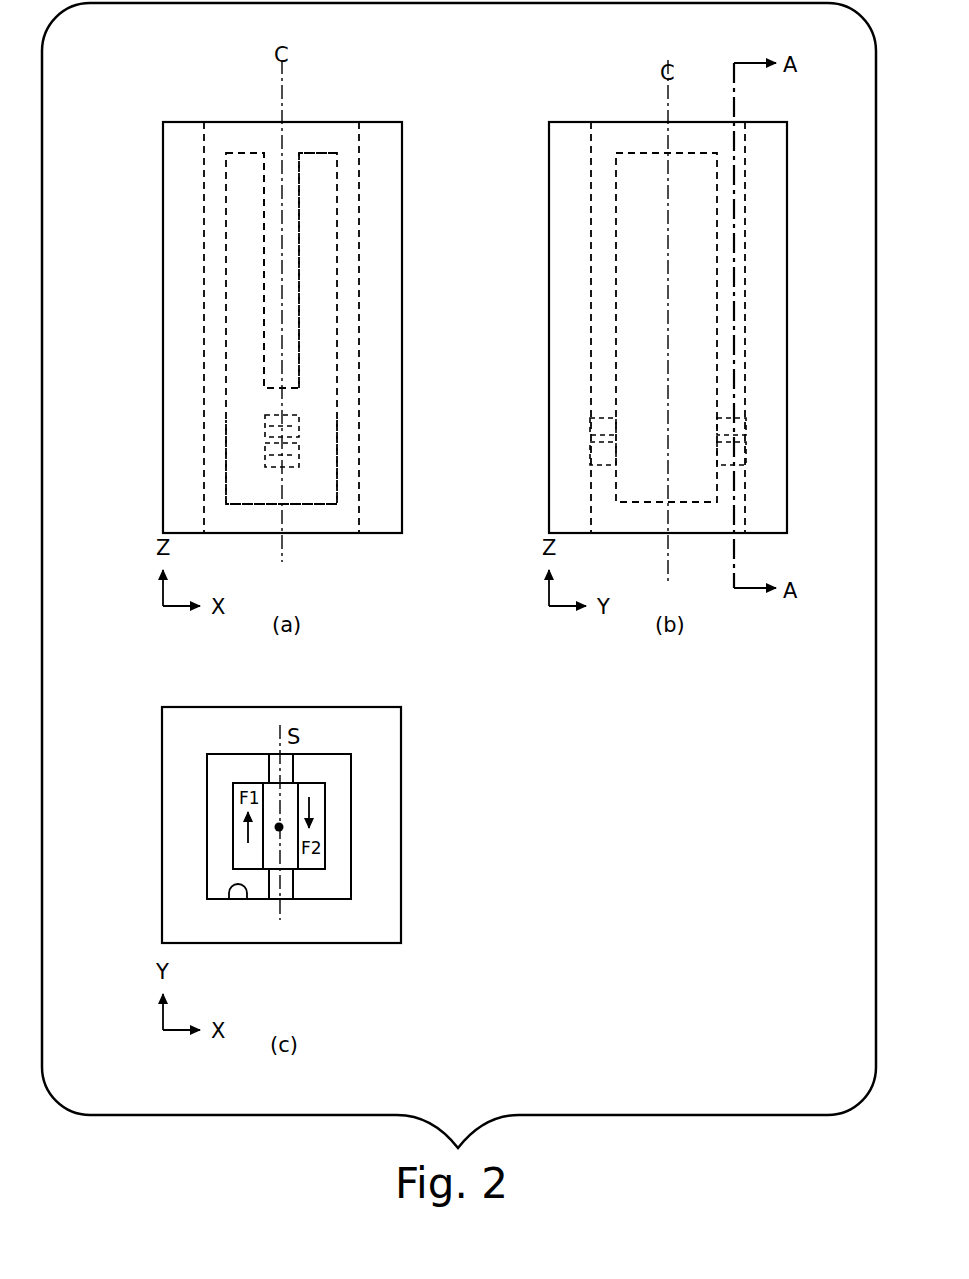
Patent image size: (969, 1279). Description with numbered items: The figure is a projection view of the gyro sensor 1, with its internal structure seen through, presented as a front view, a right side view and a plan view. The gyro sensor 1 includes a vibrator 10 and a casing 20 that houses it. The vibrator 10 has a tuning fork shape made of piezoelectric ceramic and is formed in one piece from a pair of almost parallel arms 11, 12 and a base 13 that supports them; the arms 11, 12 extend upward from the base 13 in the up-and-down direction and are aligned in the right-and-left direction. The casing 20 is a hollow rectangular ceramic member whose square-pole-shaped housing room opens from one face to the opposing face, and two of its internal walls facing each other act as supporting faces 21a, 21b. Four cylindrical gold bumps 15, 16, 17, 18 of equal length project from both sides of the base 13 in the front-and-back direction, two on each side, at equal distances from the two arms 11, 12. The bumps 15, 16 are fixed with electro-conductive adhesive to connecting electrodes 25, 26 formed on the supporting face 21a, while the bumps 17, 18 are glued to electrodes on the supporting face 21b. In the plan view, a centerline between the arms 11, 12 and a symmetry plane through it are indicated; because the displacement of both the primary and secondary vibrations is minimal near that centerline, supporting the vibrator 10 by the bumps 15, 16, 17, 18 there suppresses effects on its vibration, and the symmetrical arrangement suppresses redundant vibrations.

The gyro sensor 1 is at (160, 84).
The casing 20 is at (188, 122).
The vibrator 10 is at (265, 151).
The arm 11 is at (226, 196).
The arm 12 is at (337, 196).
The base 13 is at (337, 404).
The bump 15 is at (299, 432).
The bump 16 is at (299, 456).
The bump 17 is at (602, 416).
The bump 18 is at (606, 466).
The connecting electrode 25 is at (265, 420).
The connecting electrode 26 is at (265, 452).
The supporting face 21a is at (745, 130).
The supporting face 21b is at (591, 136).